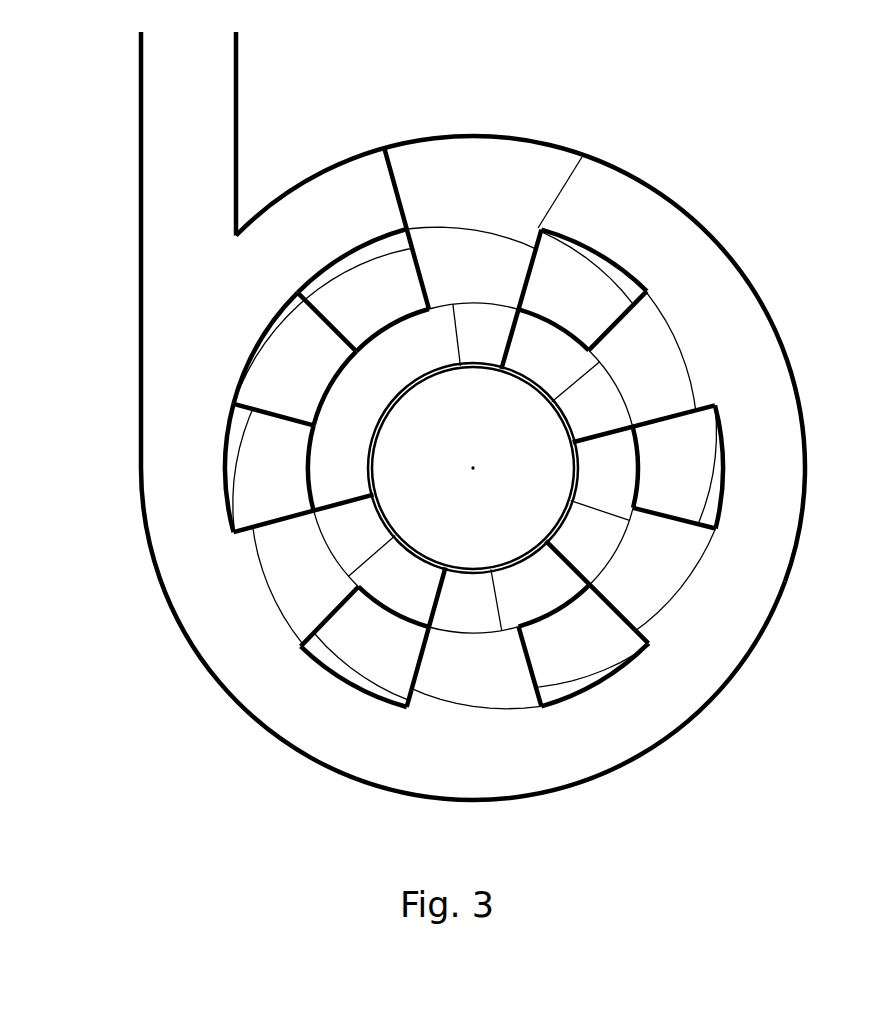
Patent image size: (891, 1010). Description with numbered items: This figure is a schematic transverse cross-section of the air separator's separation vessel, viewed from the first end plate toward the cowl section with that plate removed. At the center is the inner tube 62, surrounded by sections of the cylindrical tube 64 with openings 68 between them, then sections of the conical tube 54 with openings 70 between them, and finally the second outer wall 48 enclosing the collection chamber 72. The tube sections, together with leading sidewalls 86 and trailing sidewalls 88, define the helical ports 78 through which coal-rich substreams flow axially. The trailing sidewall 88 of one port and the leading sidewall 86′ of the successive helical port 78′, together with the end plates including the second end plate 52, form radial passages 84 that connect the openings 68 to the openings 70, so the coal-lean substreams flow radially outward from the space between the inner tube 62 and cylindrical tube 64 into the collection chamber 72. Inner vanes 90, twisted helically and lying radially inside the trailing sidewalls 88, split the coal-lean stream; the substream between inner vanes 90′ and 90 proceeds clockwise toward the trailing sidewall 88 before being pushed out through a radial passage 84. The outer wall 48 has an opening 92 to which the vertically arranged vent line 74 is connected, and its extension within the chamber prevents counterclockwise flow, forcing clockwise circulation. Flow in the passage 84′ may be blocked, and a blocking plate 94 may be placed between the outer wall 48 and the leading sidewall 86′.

The second outer wall 48 is at (812, 525).
The second end plate 52 is at (475, 352).
The conical tube 54 is at (630, 270).
The inner tube 62 is at (557, 523).
The cylindrical tube 64 is at (580, 333).
The openings 68 is at (455, 300).
The openings 70 is at (495, 228).
The collection chamber 72 is at (800, 437).
The vent line 74 is at (165, 185).
The helical port 78 is at (582, 298).
The helical port 78′ is at (368, 290).
The radial passage 84 is at (495, 275).
The radial passage 84′ is at (292, 357).
The leading sidewall 86 is at (665, 380).
The leading sidewall 86′ is at (432, 260).
The trailing sidewall 88 is at (563, 277).
The inner vane 90 is at (543, 370).
The inner vane 90′ is at (412, 375).
The opening 92 is at (185, 330).
The blocking plate 94 is at (455, 170).